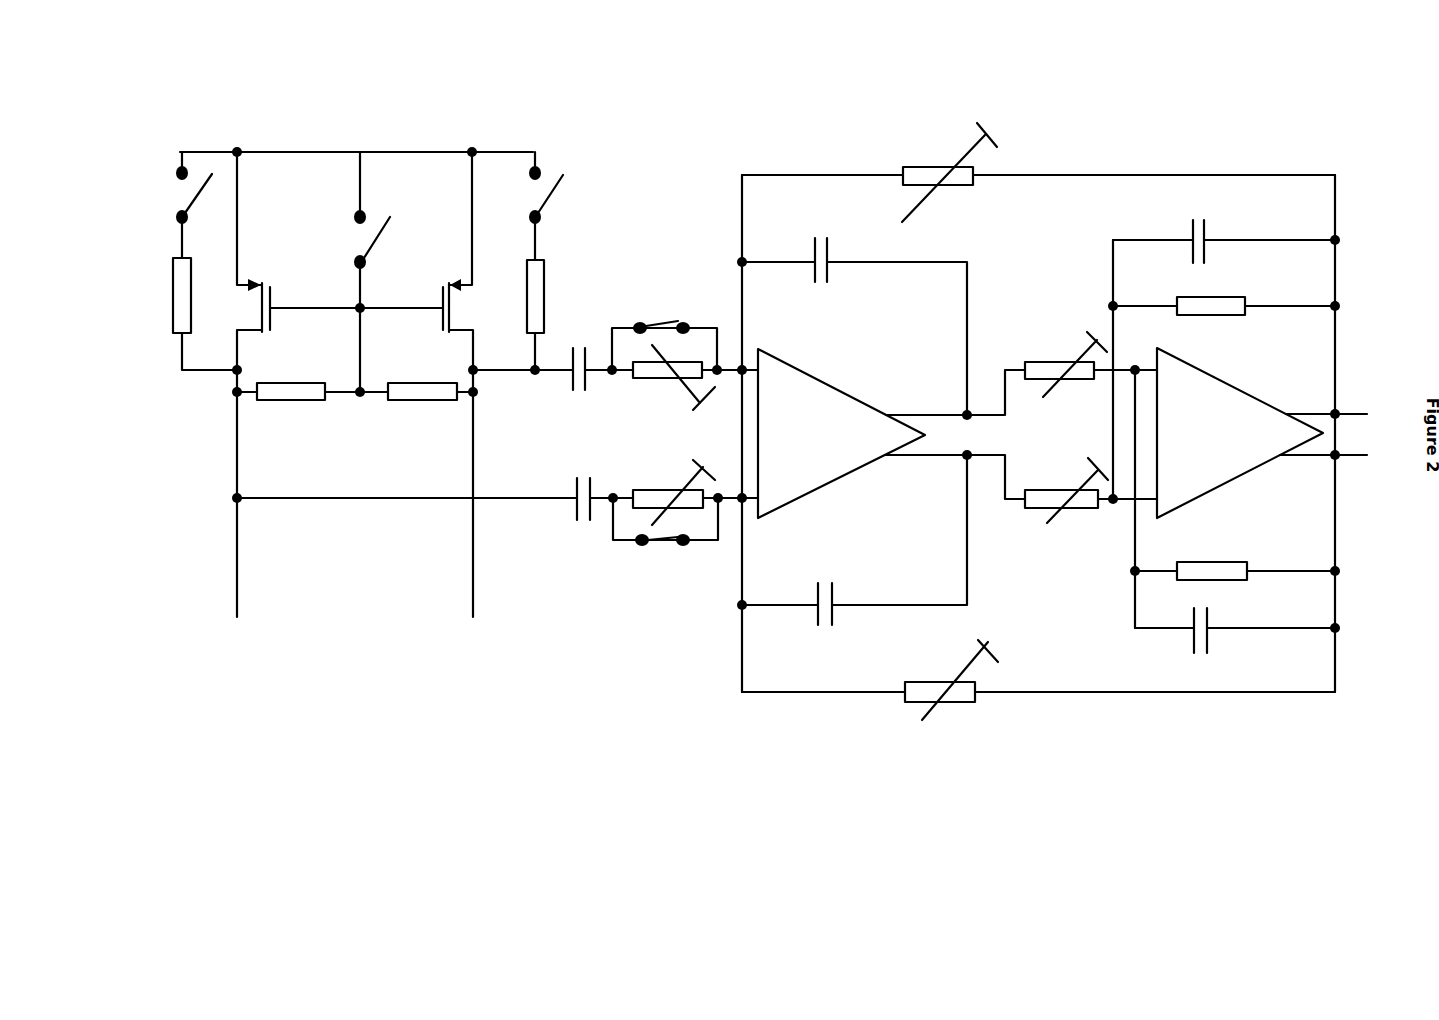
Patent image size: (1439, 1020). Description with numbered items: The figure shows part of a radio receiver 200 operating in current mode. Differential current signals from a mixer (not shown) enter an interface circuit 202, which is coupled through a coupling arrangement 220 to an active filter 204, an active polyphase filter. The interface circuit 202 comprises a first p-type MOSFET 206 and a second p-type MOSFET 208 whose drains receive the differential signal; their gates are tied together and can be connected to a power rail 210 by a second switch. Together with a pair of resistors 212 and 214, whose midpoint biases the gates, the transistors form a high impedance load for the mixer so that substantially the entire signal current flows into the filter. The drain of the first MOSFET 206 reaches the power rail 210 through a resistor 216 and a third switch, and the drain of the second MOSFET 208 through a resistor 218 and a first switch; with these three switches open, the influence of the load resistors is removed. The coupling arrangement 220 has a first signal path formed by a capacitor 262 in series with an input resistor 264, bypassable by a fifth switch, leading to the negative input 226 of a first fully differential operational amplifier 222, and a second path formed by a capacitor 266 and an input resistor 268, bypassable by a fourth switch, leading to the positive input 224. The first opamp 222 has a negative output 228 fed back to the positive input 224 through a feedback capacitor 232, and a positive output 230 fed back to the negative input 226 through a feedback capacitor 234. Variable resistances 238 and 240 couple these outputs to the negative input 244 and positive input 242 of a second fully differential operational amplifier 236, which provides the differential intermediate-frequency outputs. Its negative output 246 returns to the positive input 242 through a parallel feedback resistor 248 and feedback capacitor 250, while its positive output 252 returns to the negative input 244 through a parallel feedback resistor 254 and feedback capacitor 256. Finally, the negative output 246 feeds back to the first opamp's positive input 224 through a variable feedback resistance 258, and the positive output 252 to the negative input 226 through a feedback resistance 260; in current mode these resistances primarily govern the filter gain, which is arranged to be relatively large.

The radio receiver 200 is at (743, 452).
The interface circuit 202 is at (205, 660).
The active filter 204 is at (1350, 747).
The first p-type MOSFET 206 is at (272, 296).
The second p-type MOSFET 208 is at (440, 296).
The power rail 210 is at (322, 152).
The resistor 212 is at (316, 402).
The resistor 214 is at (398, 402).
The resistor 216 is at (173, 314).
The resistor 218 is at (545, 310).
The coupling arrangement 220 is at (512, 747).
The first fully differential operational amplifier 222 is at (883, 455).
The positive differential input 224 is at (776, 368).
The negative differential input 226 is at (768, 506).
The negative differential output 228 is at (881, 412).
The positive differential output 230 is at (866, 453).
The feedback capacitor 232 is at (813, 243).
The feedback capacitor 234 is at (835, 588).
The second fully differential operational amplifier 236 is at (1261, 450).
The variable resistance 238 is at (1091, 383).
The variable resistance 240 is at (1035, 488).
The positive input 242 is at (1166, 508).
The negative input 244 is at (1175, 366).
The negative output 246 is at (1277, 410).
The feedback resistor 248 is at (1238, 297).
The feedback capacitor 250 is at (1208, 225).
The positive output 252 is at (1262, 452).
The feedback resistor 254 is at (1240, 581).
The feedback capacitor 256 is at (1192, 638).
The feedback resistance 258 is at (903, 163).
The feedback resistance 260 is at (930, 682).
The capacitor 262 is at (578, 525).
The input resistor 264 is at (647, 486).
The capacitor 266 is at (570, 382).
The input resistor 268 is at (643, 382).